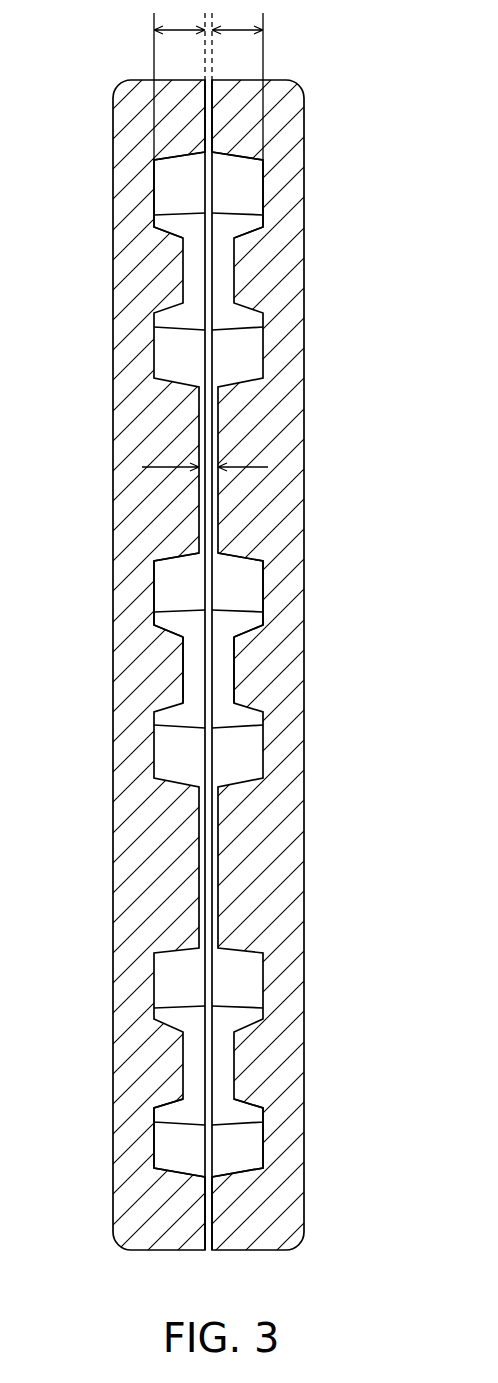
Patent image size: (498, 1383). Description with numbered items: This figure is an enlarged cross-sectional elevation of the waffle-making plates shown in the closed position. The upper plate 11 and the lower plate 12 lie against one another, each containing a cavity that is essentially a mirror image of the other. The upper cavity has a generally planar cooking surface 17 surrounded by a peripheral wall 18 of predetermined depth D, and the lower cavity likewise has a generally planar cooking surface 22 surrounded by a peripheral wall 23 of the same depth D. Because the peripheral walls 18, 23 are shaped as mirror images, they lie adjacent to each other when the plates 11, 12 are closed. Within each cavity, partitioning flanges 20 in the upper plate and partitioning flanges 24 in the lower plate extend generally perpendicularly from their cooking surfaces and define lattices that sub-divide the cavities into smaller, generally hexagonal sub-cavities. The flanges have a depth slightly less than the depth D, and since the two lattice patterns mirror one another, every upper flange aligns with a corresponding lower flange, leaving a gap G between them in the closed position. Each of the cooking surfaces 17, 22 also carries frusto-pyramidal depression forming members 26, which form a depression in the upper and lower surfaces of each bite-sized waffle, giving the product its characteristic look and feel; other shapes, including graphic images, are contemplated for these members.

The upper plate 11 is at (112, 297).
The lower plate 12 is at (305, 281).
The cooking surface 17 is at (155, 1133).
The peripheral wall 18 is at (185, 158).
The partitioning flanges 20 is at (187, 557).
The cooking surface 22 is at (262, 1132).
The peripheral wall 23 is at (233, 158).
The partitioning flanges 24 is at (237, 558).
The depression forming members 26 is at (183, 663).
The gap G is at (238, 462).
The depth D is at (208, 83).